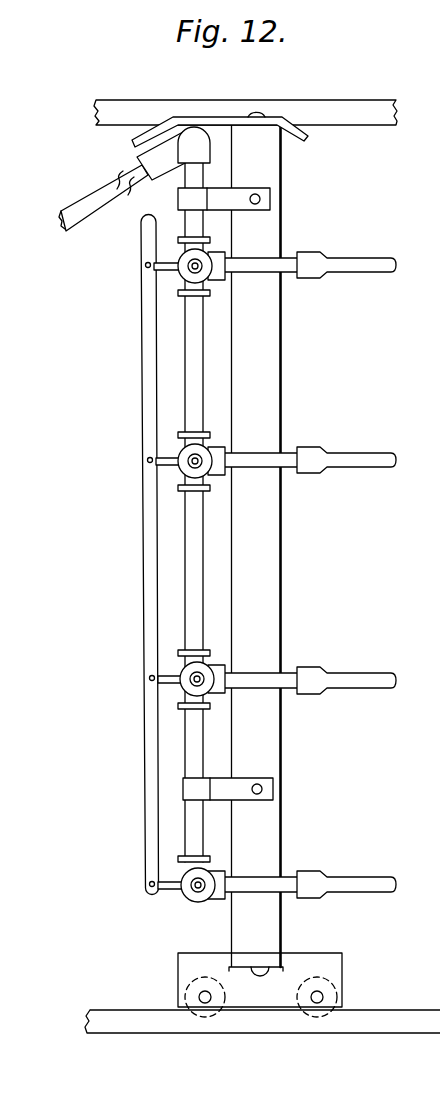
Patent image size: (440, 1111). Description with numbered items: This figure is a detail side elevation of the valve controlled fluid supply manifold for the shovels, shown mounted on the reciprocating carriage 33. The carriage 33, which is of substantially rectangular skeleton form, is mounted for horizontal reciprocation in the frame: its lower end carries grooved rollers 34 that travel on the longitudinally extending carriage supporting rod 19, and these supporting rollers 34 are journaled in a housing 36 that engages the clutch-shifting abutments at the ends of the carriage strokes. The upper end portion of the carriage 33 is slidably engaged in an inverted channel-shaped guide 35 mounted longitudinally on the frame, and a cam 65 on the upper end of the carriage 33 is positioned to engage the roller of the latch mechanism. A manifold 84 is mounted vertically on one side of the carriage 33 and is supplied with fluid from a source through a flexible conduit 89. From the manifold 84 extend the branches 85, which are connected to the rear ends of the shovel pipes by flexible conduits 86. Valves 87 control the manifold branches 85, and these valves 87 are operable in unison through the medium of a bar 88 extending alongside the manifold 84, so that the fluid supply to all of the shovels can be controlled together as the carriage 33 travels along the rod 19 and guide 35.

The carriage supporting rod 19 is at (413, 1020).
The carriage 33 is at (286, 599).
The grooved rollers 34 is at (222, 1000).
The inverted channel-shaped guide 35 is at (362, 103).
The housing 36 is at (327, 963).
The cam 65 is at (305, 141).
The manifold 84 is at (120, 345).
The manifold branches 85 is at (260, 463).
The flexible conduits 86 is at (367, 270).
The valves 87 is at (186, 271).
The bar 88 is at (150, 581).
The flexible conduit 89 is at (99, 194).